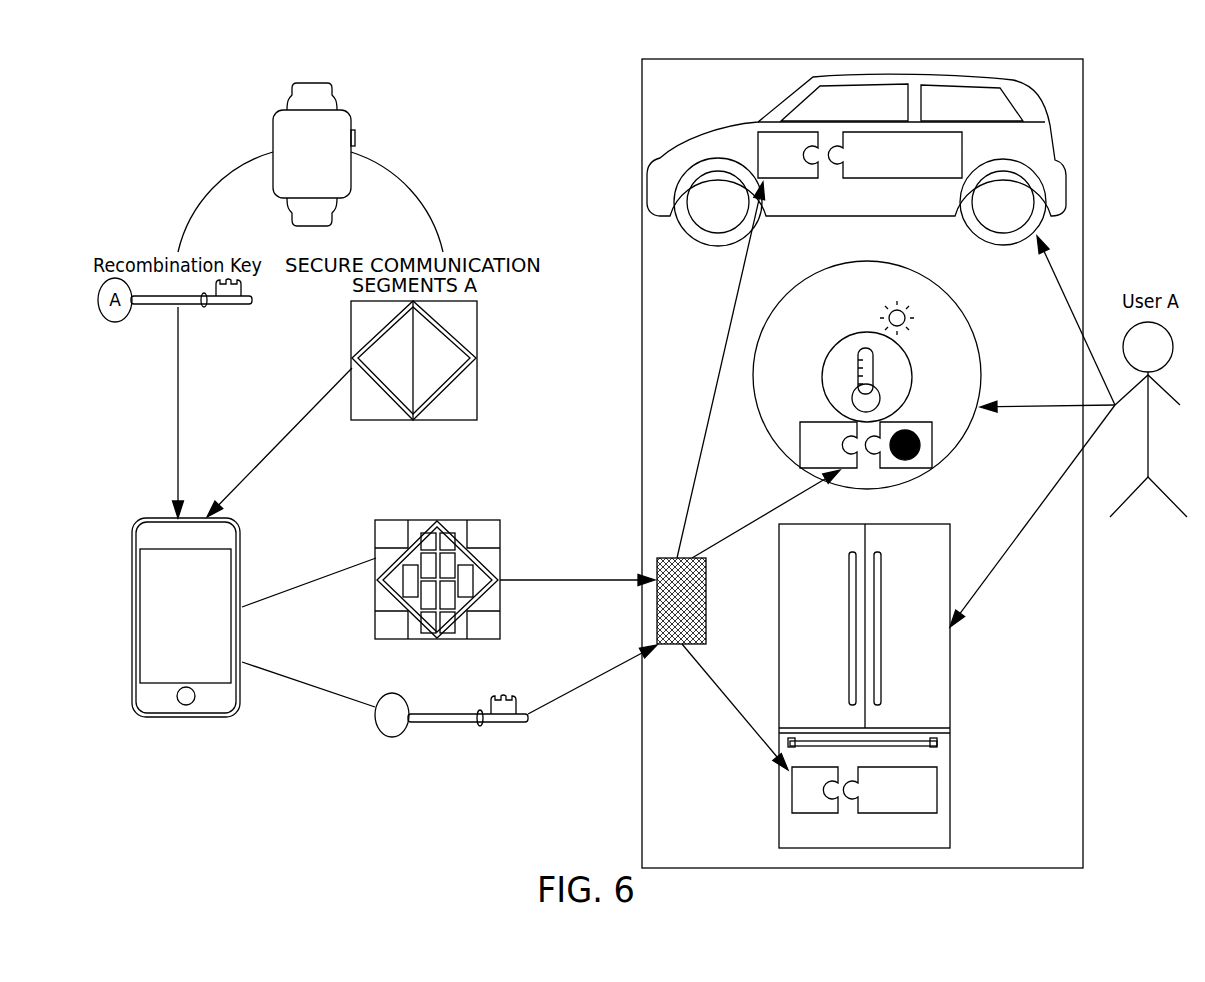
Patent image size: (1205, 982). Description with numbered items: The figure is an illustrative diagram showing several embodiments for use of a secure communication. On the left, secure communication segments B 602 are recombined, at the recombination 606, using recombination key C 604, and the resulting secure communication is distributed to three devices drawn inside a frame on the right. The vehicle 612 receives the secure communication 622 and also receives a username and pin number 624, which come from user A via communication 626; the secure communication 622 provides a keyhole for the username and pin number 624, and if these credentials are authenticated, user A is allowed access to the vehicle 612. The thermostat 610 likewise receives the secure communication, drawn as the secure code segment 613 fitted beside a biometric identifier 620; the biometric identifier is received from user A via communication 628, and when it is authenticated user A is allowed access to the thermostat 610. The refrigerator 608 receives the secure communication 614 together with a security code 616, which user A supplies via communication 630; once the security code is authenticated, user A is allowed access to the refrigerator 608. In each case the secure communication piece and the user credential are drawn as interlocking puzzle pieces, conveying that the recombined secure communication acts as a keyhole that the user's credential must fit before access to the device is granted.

The secure communication segments B 602 is at (501, 603).
The recombination key C 604 is at (498, 723).
The recombination 606 is at (700, 644).
The refrigerator 608 is at (950, 575).
The thermostat 610 is at (820, 268).
The vehicle 612 is at (1018, 86).
The secure code segment of thermostat 613 is at (797, 452).
The secure communication 614 is at (792, 783).
The security code 616 is at (937, 783).
The biometric identifier 620 is at (932, 452).
The secure communication 622 is at (816, 179).
The username and pin number 624 is at (947, 179).
The communication 626 is at (1068, 295).
The communication 628 is at (1078, 410).
The communication 630 is at (1003, 567).